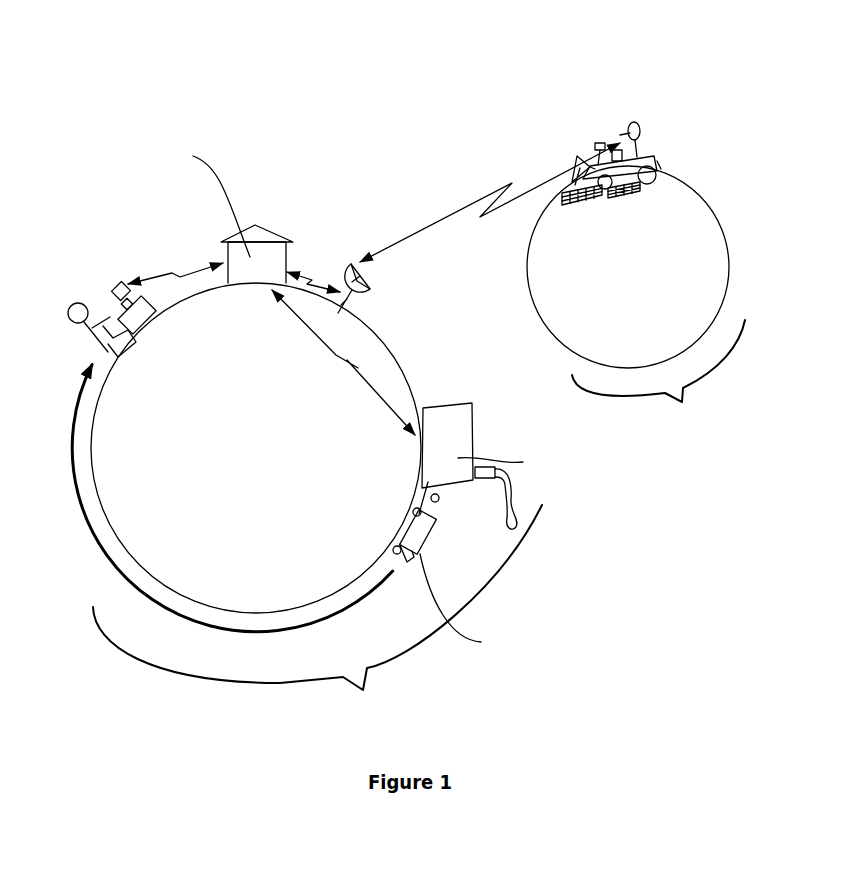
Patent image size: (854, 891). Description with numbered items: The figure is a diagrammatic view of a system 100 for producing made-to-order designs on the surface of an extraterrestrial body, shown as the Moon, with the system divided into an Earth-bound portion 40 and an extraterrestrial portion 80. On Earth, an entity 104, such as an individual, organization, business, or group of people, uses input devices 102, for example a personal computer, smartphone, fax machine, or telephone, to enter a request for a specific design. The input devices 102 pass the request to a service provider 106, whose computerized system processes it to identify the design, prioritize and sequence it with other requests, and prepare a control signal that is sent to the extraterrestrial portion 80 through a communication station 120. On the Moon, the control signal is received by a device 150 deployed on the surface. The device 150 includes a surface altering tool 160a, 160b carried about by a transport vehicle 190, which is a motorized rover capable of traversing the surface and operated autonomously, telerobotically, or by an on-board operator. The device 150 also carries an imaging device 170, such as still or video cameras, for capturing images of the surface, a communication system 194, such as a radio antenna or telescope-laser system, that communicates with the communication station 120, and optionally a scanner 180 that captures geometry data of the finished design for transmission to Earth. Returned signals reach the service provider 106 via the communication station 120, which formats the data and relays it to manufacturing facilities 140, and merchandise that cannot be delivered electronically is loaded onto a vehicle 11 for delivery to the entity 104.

The system 100 is at (380, 99).
The input devices 102 is at (118, 286).
The entity 104 is at (79, 303).
The service provider 106 is at (256, 225).
The communication station 120 is at (370, 283).
The manufacturing facilities 140 is at (477, 442).
The vehicle 11 is at (425, 538).
The Earth-bound portion 40 is at (307, 496).
The extraterrestrial portion 80 is at (636, 297).
The device 150 is at (652, 156).
The surface altering tool 160a is at (573, 161).
The surface altering tool 160b is at (649, 186).
The imaging device 170 is at (595, 146).
The scanner 180 is at (618, 138).
The transport vehicle 190 is at (657, 160).
The communication system 194 is at (636, 123).